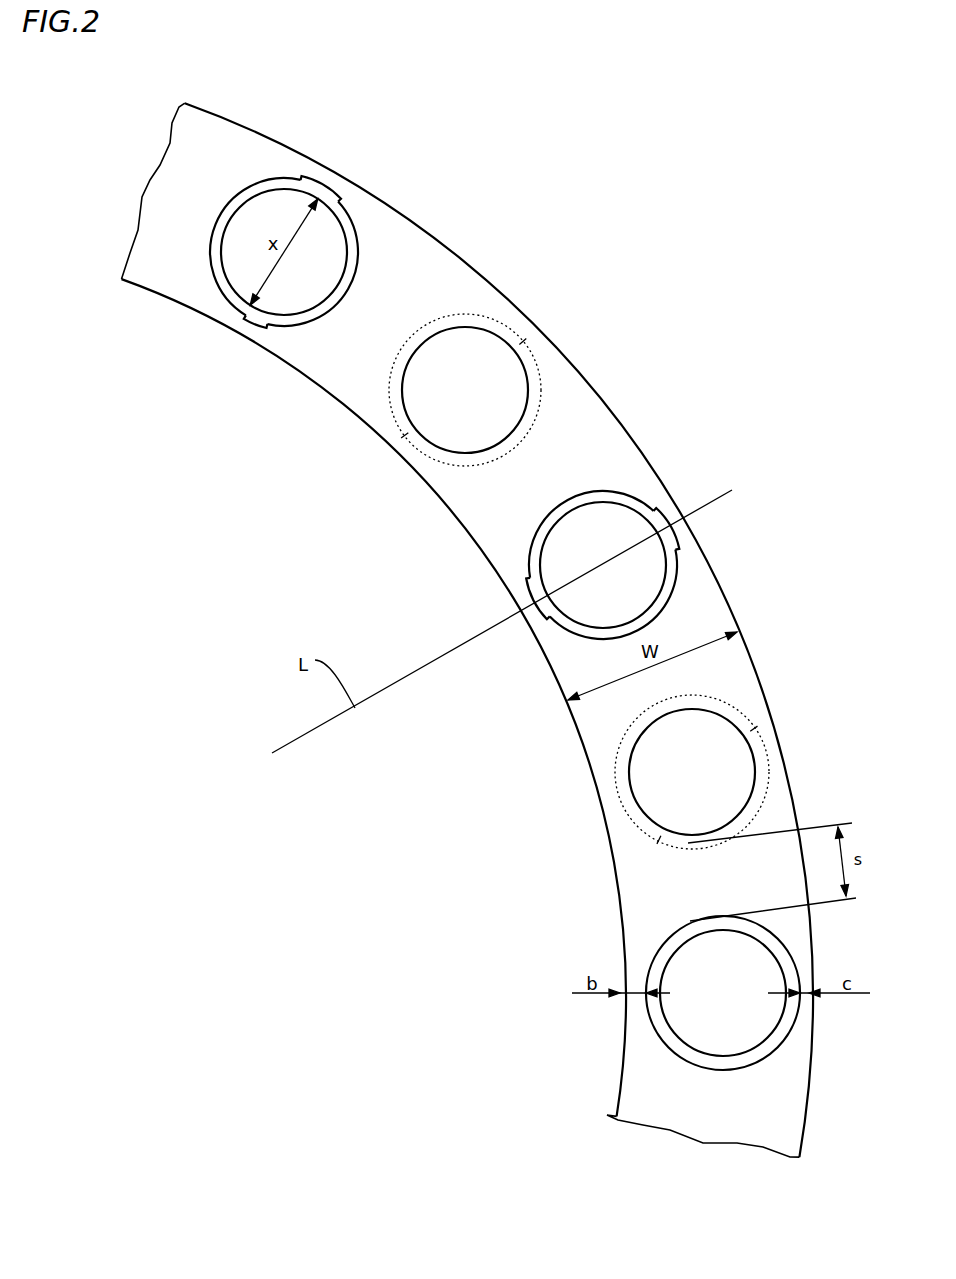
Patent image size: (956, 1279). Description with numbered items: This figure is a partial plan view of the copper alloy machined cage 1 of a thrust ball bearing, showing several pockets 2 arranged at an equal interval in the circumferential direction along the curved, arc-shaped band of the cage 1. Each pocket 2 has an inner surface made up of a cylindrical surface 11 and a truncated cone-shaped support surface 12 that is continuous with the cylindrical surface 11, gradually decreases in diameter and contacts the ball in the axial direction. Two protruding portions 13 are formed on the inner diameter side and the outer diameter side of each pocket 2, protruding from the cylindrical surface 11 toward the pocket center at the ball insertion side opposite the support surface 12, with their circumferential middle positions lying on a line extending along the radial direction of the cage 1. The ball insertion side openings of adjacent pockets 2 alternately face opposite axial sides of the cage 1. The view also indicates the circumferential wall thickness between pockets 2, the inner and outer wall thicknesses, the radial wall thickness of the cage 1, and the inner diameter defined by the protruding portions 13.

The machined cage 1 is at (447, 247).
The pocket 2 is at (527, 623).
The cylindrical surface 11 is at (667, 582).
The support surface 12 is at (660, 607).
The protruding portion 13 is at (523, 335).